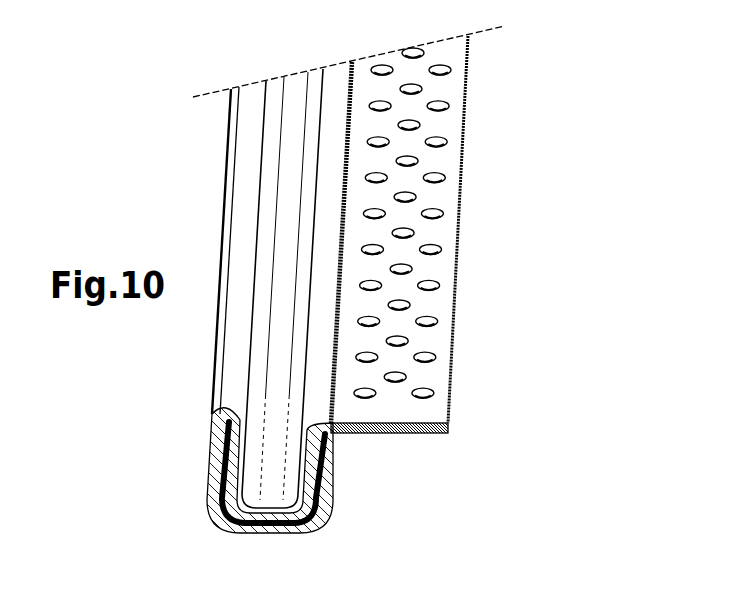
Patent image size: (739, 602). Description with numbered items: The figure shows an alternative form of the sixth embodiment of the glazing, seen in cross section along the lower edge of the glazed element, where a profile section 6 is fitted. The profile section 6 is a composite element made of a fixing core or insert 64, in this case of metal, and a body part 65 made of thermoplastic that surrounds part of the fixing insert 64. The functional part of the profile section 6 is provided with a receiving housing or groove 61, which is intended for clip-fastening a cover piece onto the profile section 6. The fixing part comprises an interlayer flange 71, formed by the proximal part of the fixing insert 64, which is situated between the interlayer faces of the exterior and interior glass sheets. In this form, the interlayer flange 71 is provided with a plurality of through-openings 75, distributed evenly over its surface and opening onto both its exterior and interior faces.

The profile section 6 is at (503, 150).
The receiving housing or groove 61 is at (288, 478).
The fixing core or insert 64 is at (283, 528).
The body part 65 is at (213, 505).
The interlayer flange 71 is at (387, 415).
The through-openings 75 is at (437, 245).